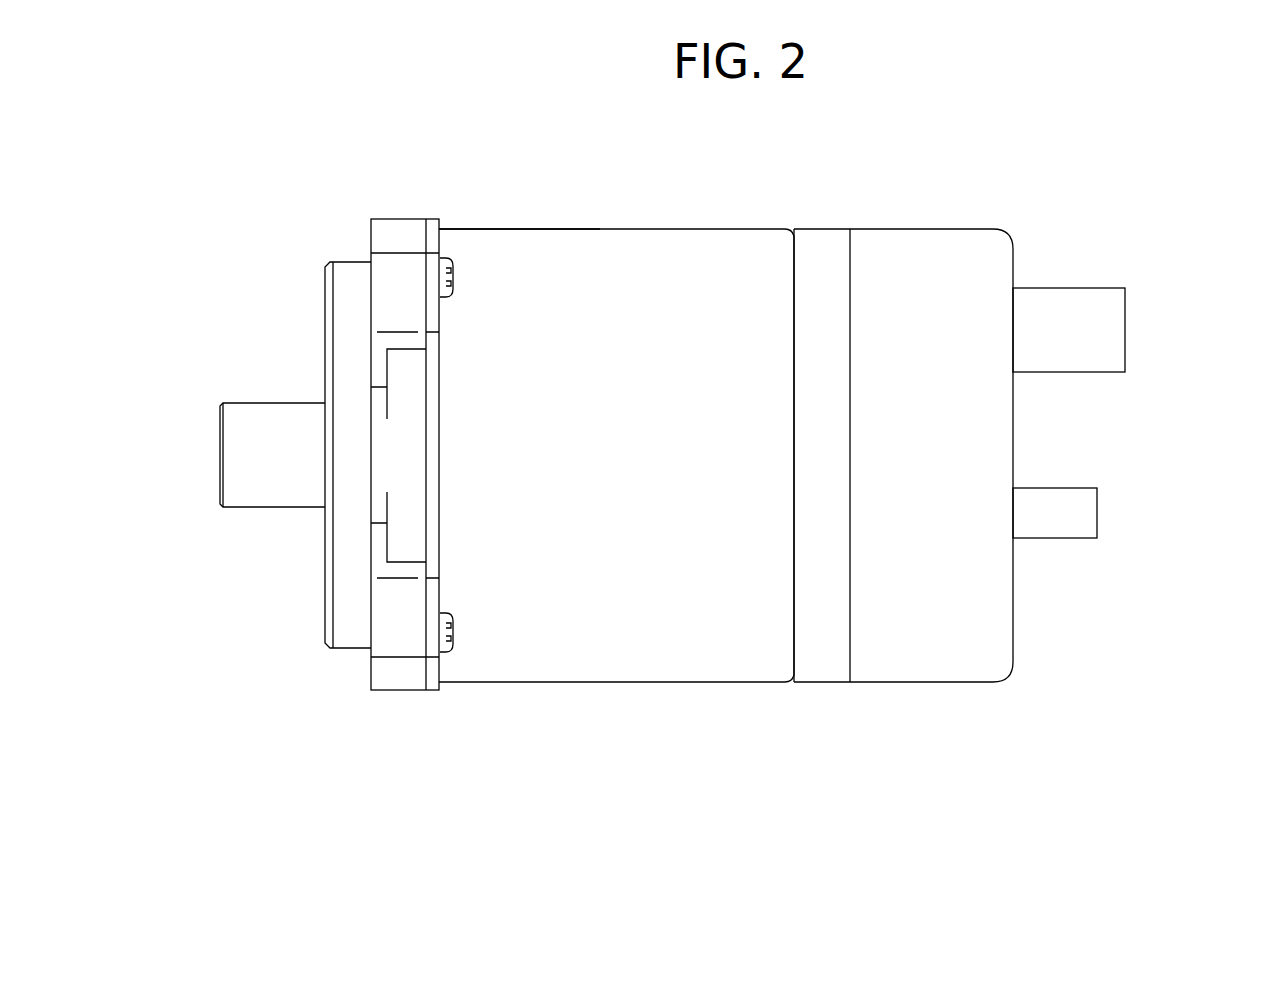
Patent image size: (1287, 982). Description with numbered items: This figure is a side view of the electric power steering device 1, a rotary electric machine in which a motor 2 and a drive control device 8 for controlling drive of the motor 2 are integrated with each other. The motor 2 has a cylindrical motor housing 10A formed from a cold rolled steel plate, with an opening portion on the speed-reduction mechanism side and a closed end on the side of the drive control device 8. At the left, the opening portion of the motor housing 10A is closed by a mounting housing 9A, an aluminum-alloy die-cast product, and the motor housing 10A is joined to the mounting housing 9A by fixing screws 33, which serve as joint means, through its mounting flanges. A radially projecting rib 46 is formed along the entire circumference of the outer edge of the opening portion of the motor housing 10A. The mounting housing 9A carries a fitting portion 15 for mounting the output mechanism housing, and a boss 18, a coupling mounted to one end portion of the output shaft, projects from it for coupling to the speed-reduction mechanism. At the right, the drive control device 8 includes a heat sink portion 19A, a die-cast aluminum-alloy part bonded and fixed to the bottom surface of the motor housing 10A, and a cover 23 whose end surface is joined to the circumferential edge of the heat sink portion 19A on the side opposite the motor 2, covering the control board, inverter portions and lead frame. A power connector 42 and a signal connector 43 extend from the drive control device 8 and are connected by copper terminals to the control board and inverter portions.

The electric power steering device 1 is at (670, 772).
The motor 2 is at (568, 710).
The drive control device 8 is at (993, 690).
The mounting housing 9A is at (397, 673).
The motor housing 10A is at (605, 230).
The fitting portion 15 is at (343, 652).
The boss 18 is at (249, 503).
The heat sink portion 19A is at (837, 683).
The cover 23 is at (925, 683).
The fixing screws 33 is at (450, 653).
The power connector 42 is at (1112, 333).
The signal connector 43 is at (1078, 513).
The rib 46 is at (442, 227).